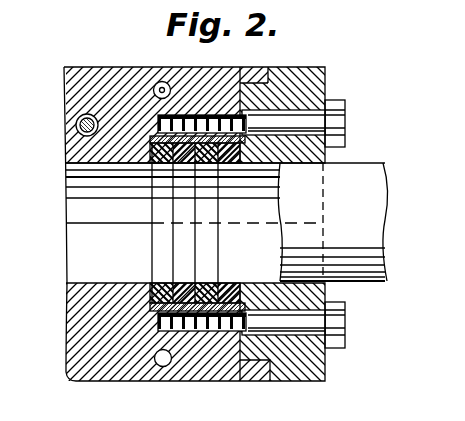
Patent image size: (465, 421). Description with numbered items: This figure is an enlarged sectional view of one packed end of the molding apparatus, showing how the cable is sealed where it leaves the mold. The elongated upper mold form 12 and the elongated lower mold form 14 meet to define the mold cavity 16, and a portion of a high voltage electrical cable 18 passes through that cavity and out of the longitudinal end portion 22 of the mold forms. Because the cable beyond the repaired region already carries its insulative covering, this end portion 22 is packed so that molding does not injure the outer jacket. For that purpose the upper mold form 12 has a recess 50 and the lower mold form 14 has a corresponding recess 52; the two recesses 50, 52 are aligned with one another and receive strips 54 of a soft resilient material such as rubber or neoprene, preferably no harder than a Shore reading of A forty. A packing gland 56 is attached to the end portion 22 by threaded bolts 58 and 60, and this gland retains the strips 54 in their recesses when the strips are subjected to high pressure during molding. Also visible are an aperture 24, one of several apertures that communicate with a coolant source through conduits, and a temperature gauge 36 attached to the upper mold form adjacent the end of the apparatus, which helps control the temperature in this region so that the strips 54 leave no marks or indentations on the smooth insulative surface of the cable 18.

The upper mold form 12 is at (99, 72).
The lower mold form 14 is at (98, 368).
The mold cavity 16 is at (101, 283).
The high voltage electrical cable 18 is at (362, 227).
The longitudinal end portion 22 is at (250, 103).
The aperture 24 is at (160, 360).
The temperature gauge 36 is at (168, 72).
The recess 50 is at (155, 161).
The recess 52 is at (152, 299).
The strip 54 is at (199, 333).
The packing gland 56 is at (304, 362).
The bolt 58 is at (312, 123).
The bolt 60 is at (314, 325).